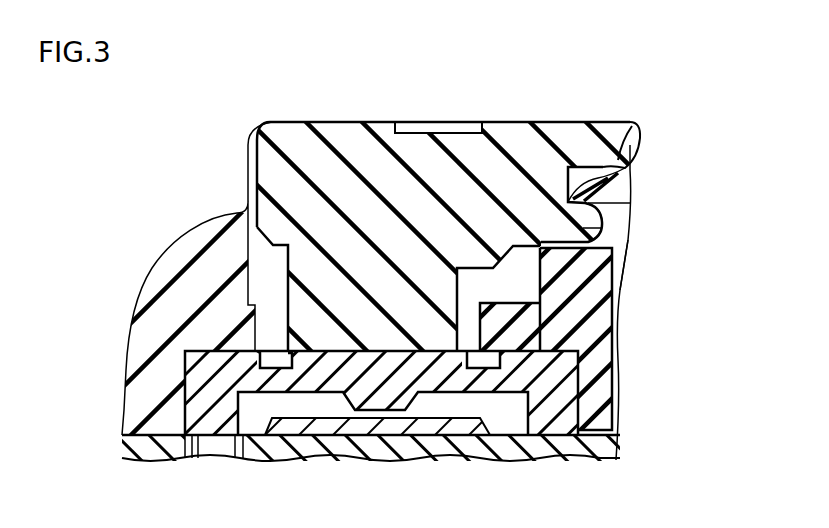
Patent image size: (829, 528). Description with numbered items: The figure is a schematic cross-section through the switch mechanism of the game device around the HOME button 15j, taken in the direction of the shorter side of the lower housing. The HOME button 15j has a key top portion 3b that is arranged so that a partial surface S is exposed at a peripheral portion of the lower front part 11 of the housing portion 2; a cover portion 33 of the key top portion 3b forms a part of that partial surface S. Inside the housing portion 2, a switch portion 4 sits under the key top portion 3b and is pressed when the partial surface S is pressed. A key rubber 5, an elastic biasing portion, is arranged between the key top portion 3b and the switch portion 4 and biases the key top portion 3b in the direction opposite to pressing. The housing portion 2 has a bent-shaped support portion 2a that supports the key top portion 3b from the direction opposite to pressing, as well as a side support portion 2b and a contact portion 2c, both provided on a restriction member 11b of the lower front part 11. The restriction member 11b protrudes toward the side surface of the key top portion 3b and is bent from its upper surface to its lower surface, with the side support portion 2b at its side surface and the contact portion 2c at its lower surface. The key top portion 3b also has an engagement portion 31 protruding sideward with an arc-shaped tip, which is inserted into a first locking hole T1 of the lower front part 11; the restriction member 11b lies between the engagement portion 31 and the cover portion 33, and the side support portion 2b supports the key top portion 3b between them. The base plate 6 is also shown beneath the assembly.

The housing portion 2 is at (157, 340).
The key top portion 3b is at (322, 157).
The HOME button 15j is at (377, 157).
The partial surface S is at (515, 120).
The cover portion 33 is at (583, 145).
The lower front part 11 is at (627, 128).
The restriction member 11b is at (600, 193).
The side support portion 2b is at (605, 196).
The first locking hole T1 is at (631, 207).
The contact portion 2c is at (603, 228).
The engagement portion 31 is at (626, 243).
The support portion 2a is at (548, 253).
The key rubber 5 is at (222, 393).
The switch portion 4 is at (333, 427).
The base 6 is at (400, 447).